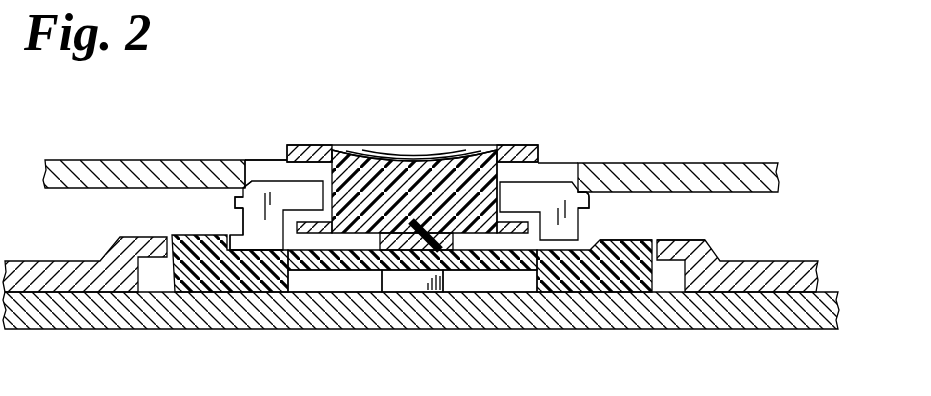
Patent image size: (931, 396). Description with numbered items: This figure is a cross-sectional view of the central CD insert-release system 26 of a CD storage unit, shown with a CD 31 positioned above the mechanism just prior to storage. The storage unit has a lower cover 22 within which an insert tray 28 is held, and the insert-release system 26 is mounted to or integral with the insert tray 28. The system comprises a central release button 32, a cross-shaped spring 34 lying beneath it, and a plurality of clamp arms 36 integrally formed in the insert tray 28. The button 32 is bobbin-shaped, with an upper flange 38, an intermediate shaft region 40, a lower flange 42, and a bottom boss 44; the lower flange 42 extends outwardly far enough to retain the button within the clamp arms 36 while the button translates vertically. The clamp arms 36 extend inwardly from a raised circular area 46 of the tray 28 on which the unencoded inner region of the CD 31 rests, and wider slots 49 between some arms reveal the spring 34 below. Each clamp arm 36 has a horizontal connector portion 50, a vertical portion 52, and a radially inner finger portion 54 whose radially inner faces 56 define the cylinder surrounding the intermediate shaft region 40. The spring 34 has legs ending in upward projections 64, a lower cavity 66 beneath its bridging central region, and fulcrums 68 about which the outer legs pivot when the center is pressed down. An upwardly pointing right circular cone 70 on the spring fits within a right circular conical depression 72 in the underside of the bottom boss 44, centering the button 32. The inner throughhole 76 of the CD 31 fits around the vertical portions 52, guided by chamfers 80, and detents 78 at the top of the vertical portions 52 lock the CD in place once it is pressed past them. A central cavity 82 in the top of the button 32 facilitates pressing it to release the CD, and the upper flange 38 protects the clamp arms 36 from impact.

The lower cover 22 is at (772, 320).
The central CD insert-release system 26 is at (558, 70).
The insert tray 28 is at (781, 261).
The CD 31 is at (748, 163).
The central release button 32 is at (349, 140).
The cross-shaped spring 34 is at (186, 296).
The clamp arms 36 is at (232, 203).
The upper flange 38 is at (277, 182).
The intermediate shaft region 40 is at (322, 146).
The lower flange 42 is at (314, 236).
The bottom boss 44 is at (358, 251).
The raised circular area 46 is at (682, 240).
The slots 49 is at (603, 295).
The horizontal connector portion 50 is at (228, 238).
The vertical portion 52 is at (241, 213).
The radially inner finger portion 54 is at (265, 160).
The radially inner faces 56 is at (511, 147).
The upward projections 64 is at (617, 240).
The lower cavity 66 is at (495, 282).
The fulcrums 68 is at (290, 272).
The right circular cone 70 is at (412, 243).
The right circular conical depression 72 is at (470, 160).
The inner throughhole 76 is at (578, 182).
The detents 78 is at (590, 208).
The chamfers 80 is at (246, 186).
The central cavity 82 is at (417, 150).